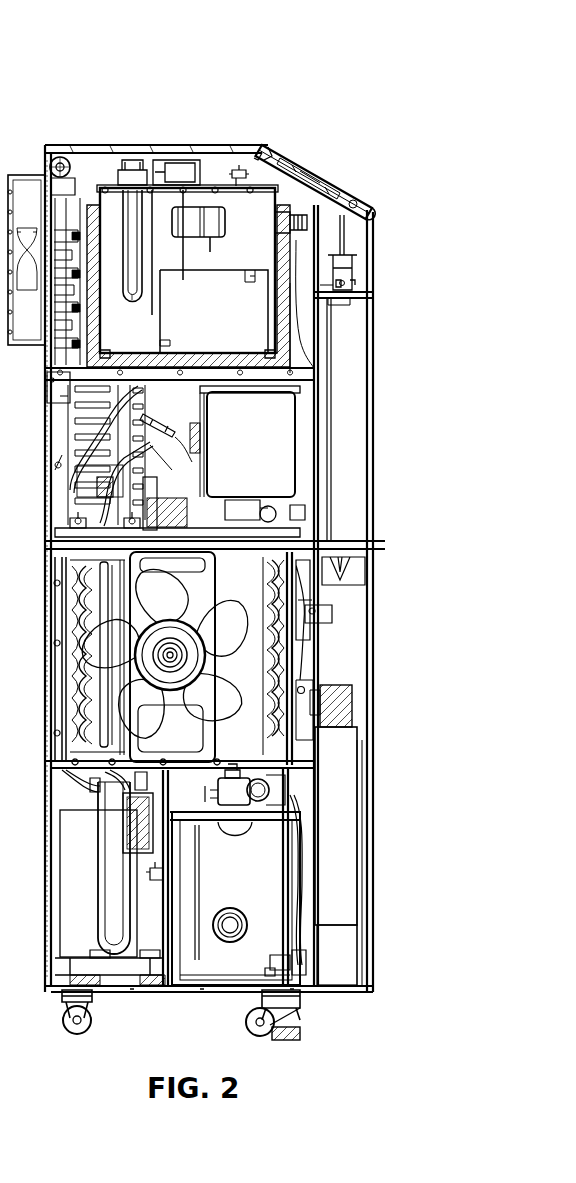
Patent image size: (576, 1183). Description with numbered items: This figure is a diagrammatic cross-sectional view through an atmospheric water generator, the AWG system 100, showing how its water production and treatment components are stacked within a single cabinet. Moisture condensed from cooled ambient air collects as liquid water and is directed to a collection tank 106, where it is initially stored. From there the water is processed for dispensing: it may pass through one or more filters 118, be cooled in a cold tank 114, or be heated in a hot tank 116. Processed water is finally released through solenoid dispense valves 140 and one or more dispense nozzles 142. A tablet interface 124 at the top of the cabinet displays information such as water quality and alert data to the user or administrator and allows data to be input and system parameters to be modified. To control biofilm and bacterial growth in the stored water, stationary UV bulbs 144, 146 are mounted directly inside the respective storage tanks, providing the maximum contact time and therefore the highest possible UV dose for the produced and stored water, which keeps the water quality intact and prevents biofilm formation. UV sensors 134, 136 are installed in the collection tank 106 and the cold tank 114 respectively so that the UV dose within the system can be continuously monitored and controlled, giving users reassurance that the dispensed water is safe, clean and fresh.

The AWG system 100 is at (53, 95).
The collection tank 106 is at (268, 877).
The cold tank 114 is at (247, 247).
The hot tank 116 is at (257, 440).
The filters 118 is at (340, 755).
The tablet interface 124 is at (331, 183).
The UV sensor 134 is at (232, 798).
The UV sensor 136 is at (262, 218).
The solenoid dispense valves 140 is at (355, 257).
The dispense nozzles 142 is at (347, 311).
The UV bulb 144 is at (246, 923).
The UV bulb 146 is at (133, 232).